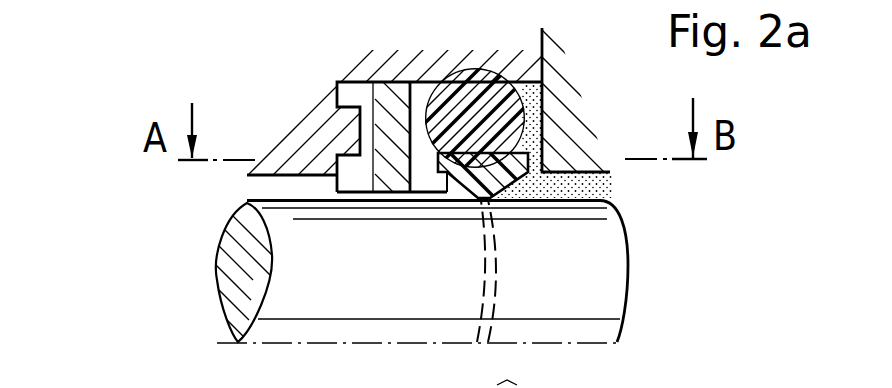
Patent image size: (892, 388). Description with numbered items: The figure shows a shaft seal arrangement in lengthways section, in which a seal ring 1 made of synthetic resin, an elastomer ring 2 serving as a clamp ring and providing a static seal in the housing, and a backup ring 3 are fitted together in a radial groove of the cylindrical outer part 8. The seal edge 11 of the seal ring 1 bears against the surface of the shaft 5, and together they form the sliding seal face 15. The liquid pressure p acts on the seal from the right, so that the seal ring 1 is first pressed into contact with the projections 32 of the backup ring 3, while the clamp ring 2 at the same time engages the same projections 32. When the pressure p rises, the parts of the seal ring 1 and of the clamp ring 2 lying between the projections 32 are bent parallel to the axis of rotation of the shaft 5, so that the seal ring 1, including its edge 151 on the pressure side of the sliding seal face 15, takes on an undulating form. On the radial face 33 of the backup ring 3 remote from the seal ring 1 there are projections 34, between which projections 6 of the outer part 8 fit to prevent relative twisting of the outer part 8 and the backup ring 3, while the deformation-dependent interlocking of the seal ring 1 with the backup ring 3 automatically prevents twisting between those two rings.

The seal ring 1 is at (510, 165).
The elastomer ring 2 is at (453, 107).
The backup ring 3 is at (393, 97).
The shaft 5 is at (595, 243).
The projections 6 is at (350, 128).
The cylindrical outer part 8 is at (518, 68).
The seal edge 11 is at (492, 200).
The sliding seal face 15 is at (482, 202).
The projections 32 is at (422, 95).
The radial face 33 is at (373, 182).
The projections 34 is at (353, 98).
The edge 151 is at (497, 302).
The pressure p is at (572, 187).